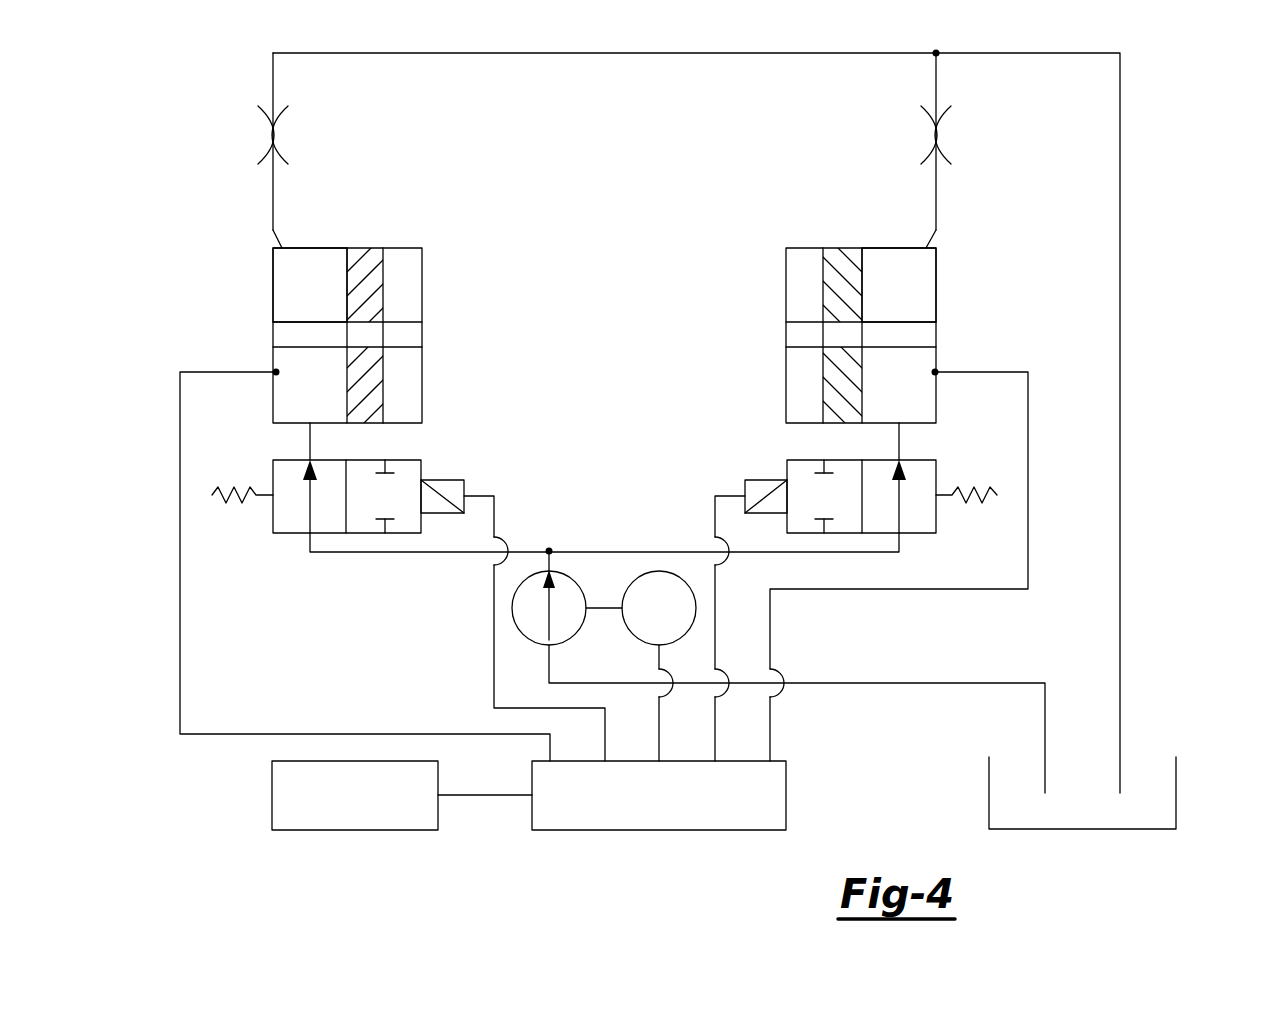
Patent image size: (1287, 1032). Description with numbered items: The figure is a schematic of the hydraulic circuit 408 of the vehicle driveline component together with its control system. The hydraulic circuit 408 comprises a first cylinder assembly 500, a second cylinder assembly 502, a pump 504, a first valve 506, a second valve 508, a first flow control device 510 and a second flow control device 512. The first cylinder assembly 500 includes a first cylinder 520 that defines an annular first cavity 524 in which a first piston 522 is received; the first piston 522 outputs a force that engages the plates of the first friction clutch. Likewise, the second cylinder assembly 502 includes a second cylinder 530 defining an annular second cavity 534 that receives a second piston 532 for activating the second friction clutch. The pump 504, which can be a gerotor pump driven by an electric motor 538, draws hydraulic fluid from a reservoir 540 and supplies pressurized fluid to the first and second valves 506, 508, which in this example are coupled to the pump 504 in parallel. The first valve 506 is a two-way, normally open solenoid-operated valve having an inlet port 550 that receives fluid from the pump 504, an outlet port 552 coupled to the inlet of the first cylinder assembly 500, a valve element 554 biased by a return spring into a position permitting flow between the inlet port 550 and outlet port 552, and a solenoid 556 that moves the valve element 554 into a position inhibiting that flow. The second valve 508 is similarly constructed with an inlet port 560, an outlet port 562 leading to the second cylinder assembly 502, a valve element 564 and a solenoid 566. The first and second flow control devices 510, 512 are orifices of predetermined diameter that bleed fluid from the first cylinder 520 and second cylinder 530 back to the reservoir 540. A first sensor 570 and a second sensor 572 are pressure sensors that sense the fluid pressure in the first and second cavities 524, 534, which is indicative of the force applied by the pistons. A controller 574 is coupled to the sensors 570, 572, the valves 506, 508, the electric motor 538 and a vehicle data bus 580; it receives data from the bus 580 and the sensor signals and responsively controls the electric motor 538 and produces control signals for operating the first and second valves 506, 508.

The hydraulic circuit 408 is at (1148, 226).
The first cylinder assembly 500 is at (315, 312).
The second cylinder assembly 502 is at (897, 312).
The pump 504 is at (552, 575).
The first valve 506 is at (408, 571).
The second valve 508 is at (773, 571).
The first flow control device 510 is at (255, 134).
The second flow control device 512 is at (955, 134).
The first cylinder 520 is at (305, 248).
The first piston 522 is at (385, 292).
The first cavity 524 is at (290, 257).
The second cylinder 530 is at (905, 248).
The second piston 532 is at (823, 292).
The second cavity 534 is at (920, 257).
The electric motor 538 is at (660, 571).
The reservoir 540 is at (1176, 795).
The inlet port 550 is at (310, 535).
The outlet port 552 is at (310, 470).
The valve element 554 is at (421, 470).
The solenoid 556 is at (470, 496).
The inlet port 560 is at (899, 535).
The outlet port 562 is at (899, 470).
The valve element 564 is at (787, 470).
The solenoid 566 is at (740, 496).
The first sensor 570 is at (276, 372).
The second sensor 572 is at (935, 372).
The controller 574 is at (786, 795).
The vehicle data bus 580 is at (272, 795).